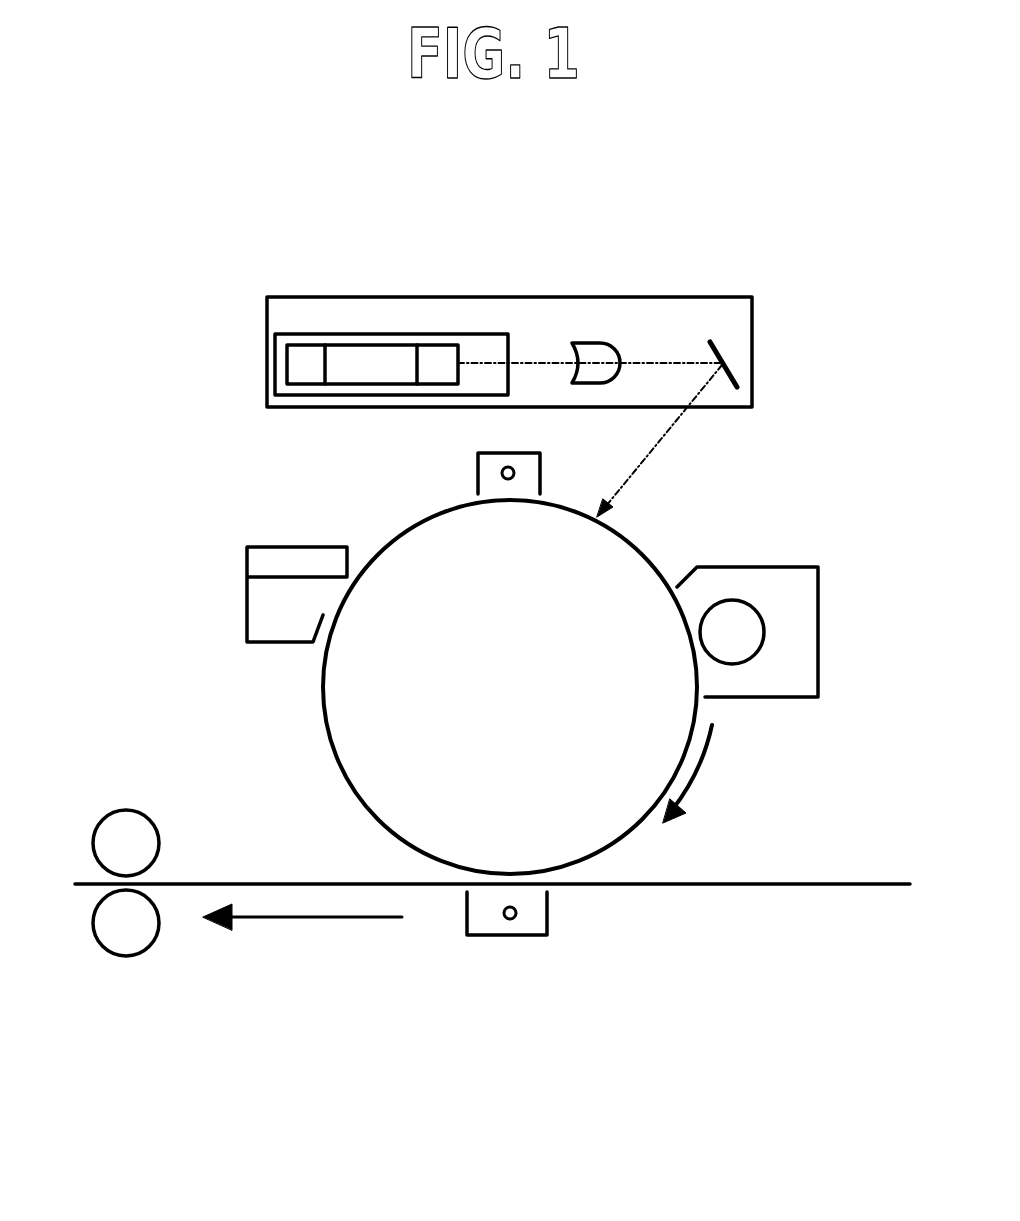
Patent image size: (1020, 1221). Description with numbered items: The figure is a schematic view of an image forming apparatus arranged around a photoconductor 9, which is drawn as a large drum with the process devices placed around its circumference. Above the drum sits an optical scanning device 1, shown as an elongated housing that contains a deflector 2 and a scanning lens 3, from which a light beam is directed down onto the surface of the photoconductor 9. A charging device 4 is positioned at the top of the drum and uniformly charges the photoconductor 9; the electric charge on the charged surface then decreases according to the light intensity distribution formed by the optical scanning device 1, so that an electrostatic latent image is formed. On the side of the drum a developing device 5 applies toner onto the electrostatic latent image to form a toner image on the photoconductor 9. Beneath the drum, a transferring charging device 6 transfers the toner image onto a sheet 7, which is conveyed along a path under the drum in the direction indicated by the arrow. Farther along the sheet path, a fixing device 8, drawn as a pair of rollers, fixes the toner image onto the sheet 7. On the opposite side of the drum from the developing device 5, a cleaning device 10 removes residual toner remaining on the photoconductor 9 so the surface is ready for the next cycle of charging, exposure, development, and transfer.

The optical scanning device 1 is at (463, 296).
The deflector 2 is at (305, 345).
The scanning lens 3 is at (600, 345).
The charging device 4 is at (478, 474).
The developing device 5 is at (818, 655).
The transferring charging device 6 is at (500, 935).
The sheet 7 is at (755, 882).
The fixing device 8 is at (157, 942).
The photoconductor 9 is at (322, 690).
The cleaning device 10 is at (247, 598).